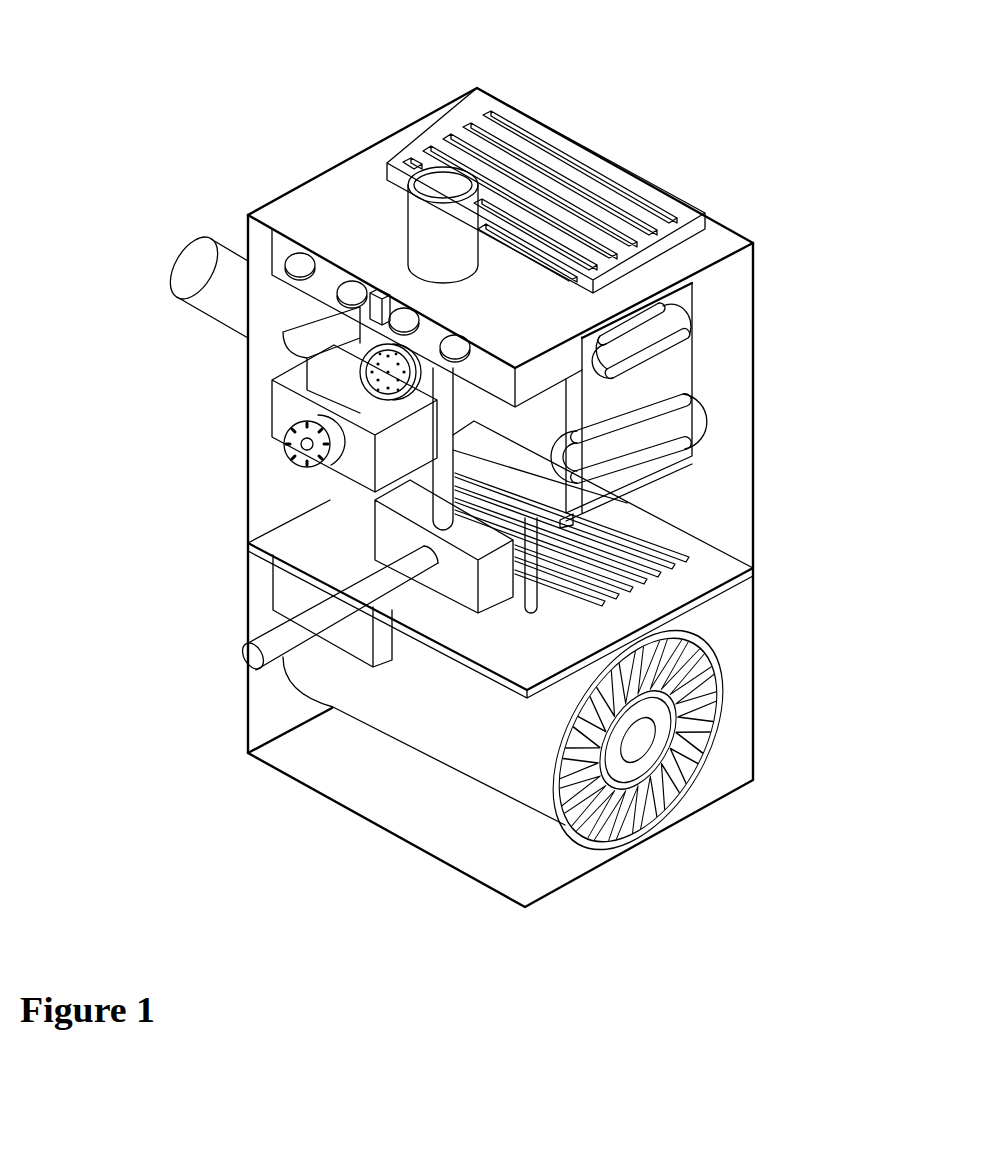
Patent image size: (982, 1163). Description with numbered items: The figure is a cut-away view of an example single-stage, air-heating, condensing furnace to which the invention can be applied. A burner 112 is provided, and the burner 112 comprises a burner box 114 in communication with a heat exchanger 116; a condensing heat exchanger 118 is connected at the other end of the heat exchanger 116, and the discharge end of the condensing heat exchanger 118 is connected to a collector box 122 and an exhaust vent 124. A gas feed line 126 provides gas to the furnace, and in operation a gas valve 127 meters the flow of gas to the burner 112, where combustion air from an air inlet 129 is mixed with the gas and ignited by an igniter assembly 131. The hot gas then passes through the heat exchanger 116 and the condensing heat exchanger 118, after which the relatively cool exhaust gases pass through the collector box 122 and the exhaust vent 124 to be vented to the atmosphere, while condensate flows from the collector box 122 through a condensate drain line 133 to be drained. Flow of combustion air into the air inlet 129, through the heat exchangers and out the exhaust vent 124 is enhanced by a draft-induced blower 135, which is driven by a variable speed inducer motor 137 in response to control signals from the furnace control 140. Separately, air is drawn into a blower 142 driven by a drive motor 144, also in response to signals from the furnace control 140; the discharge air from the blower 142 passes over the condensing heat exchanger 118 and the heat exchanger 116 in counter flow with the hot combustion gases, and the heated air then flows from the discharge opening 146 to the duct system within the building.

The burner 112 is at (330, 258).
The burner box 114 is at (248, 215).
The heat exchanger 116 is at (673, 363).
The condensing heat exchanger 118 is at (690, 430).
The collector box 122 is at (500, 480).
The exhaust vent 124 is at (208, 262).
The gas feed line 126 is at (298, 628).
The gas valve 127 is at (385, 548).
The air inlet 129 is at (465, 250).
The igniter assembly 131 is at (375, 295).
The condensate drain line 133 is at (530, 568).
The draft-induced blower 135 is at (297, 408).
The variable speed inducer motor 137 is at (290, 433).
The furnace control 140 is at (285, 590).
The blower 142 is at (683, 705).
The drive motor 144 is at (663, 735).
The discharge opening 146 is at (628, 198).